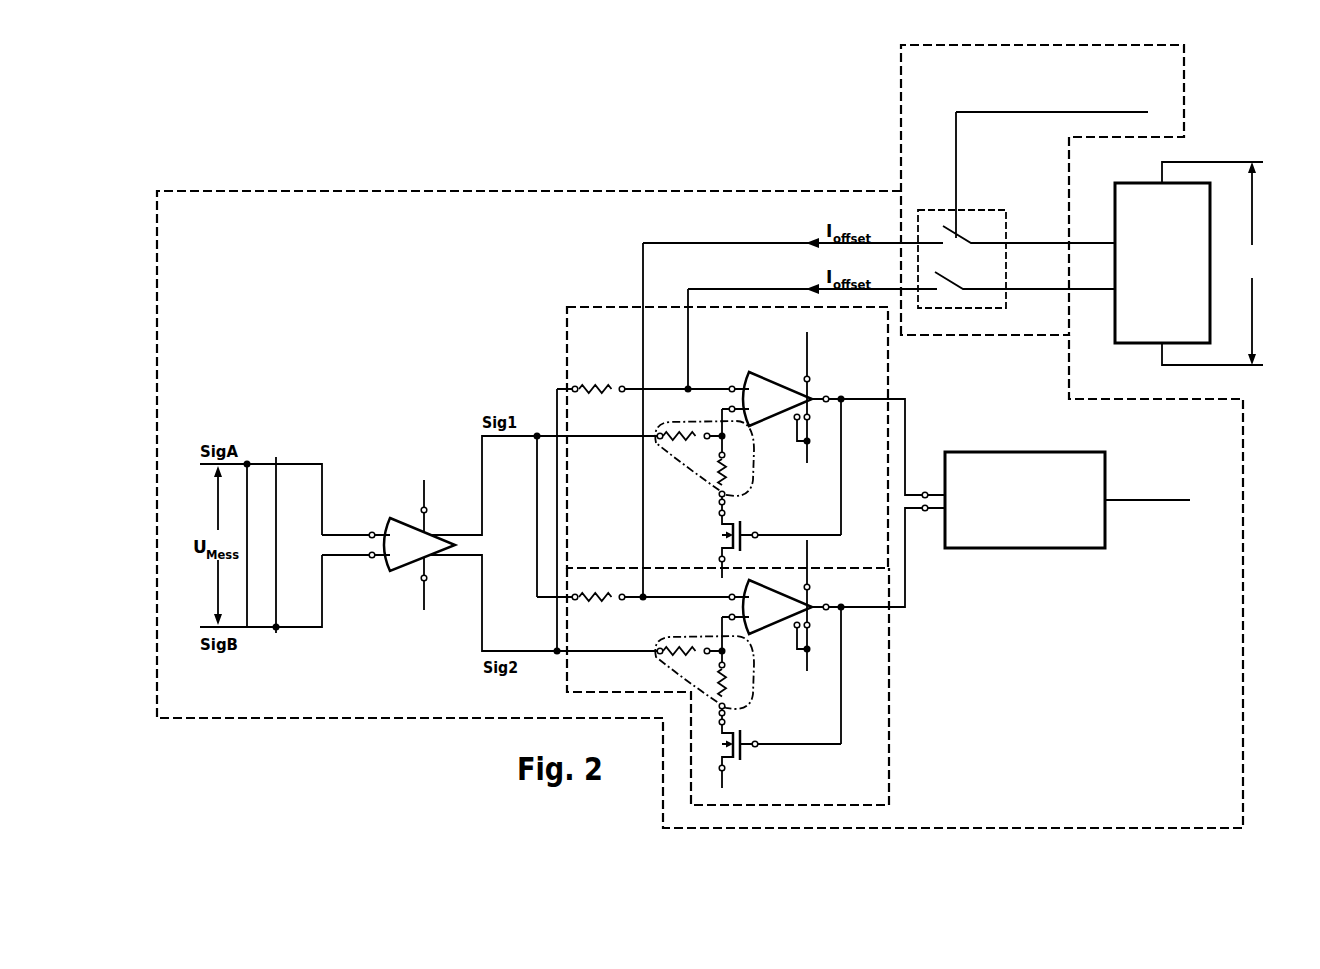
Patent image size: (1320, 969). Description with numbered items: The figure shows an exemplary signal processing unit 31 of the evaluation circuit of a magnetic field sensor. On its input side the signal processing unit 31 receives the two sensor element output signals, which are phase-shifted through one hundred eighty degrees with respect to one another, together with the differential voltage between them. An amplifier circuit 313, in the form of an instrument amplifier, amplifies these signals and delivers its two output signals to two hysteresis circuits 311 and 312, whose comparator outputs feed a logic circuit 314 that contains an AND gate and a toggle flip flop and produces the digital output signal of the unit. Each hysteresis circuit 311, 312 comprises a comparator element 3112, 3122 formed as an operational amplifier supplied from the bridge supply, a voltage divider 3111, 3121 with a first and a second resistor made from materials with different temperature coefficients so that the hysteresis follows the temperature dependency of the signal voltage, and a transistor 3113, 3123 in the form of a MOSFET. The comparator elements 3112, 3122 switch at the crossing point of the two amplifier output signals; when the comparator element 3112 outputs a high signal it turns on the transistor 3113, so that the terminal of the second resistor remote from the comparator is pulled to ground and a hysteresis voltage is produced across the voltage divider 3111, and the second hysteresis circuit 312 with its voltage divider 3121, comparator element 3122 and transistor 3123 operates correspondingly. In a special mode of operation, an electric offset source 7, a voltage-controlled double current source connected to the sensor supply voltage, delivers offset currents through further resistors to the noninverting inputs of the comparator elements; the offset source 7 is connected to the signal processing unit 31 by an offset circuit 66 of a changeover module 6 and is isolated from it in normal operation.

The changeover module 6 is at (928, 95).
The offset circuit 66 is at (982, 210).
The electric offset source 7 is at (1171, 284).
The signal processing unit 31 is at (1243, 700).
The hysteresis circuit 311 is at (593, 307).
The hysteresis circuit 312 is at (890, 690).
The amplifier circuit 313 is at (394, 567).
The logic circuit 314 is at (1025, 548).
The voltage divider 3111 is at (688, 467).
The comparator element 3112 is at (770, 372).
The transistor 3113 is at (749, 526).
The voltage divider 3121 is at (657, 664).
The comparator element 3122 is at (777, 634).
The transistor 3123 is at (750, 751).